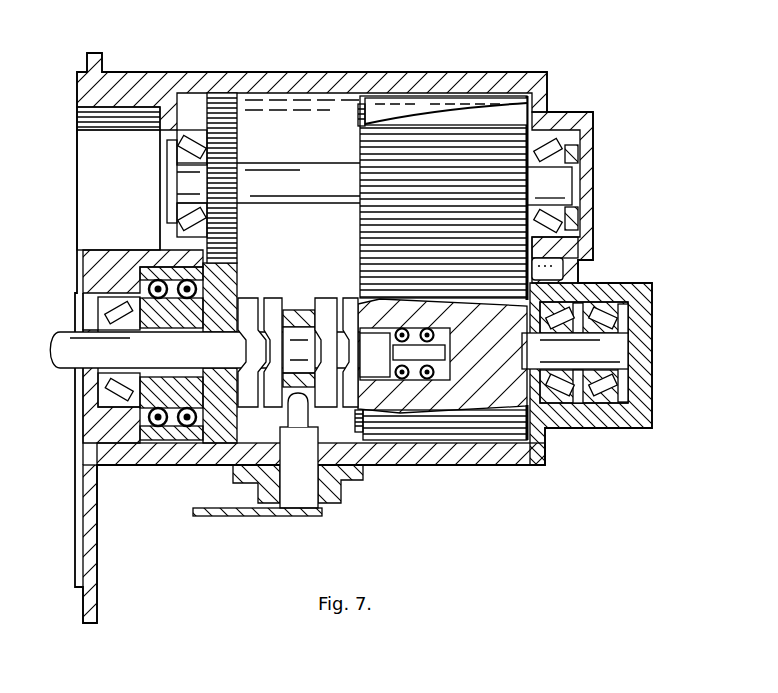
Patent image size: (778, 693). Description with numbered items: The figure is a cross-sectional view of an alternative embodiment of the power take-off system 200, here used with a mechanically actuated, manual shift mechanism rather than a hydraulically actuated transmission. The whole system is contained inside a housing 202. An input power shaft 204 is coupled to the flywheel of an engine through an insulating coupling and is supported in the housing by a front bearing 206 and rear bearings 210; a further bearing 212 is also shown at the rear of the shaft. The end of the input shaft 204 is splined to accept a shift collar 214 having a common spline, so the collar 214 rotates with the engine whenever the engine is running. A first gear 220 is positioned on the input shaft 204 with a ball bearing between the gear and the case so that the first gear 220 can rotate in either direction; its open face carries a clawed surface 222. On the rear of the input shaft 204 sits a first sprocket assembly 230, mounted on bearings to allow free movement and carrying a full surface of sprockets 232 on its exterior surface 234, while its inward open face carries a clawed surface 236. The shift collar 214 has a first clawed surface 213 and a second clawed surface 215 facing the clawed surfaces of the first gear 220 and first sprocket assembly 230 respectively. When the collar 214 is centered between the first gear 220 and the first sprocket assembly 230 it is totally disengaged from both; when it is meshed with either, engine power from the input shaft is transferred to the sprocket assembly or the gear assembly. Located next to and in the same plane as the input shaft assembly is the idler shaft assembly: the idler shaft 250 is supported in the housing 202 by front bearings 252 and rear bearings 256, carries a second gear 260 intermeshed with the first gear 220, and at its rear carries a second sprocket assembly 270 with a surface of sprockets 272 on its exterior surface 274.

The power take-off system 200 is at (512, 54).
The housing 202 is at (427, 460).
The input power shaft 204 is at (183, 357).
The front bearing 206 is at (98, 390).
The rear bearings 210 is at (563, 408).
The tapered roller bearing 212 is at (633, 312).
The first clawed surface 213 is at (273, 380).
The shift collar 214 is at (303, 343).
The second clawed surface 215 is at (326, 308).
The first gear 220 is at (187, 467).
The clawed surface 222 is at (247, 300).
The first sprocket assembly 230 is at (500, 367).
The sprockets 232 is at (505, 296).
The exterior surface 234 is at (522, 306).
The clawed surface 236 is at (352, 382).
The idler shaft 250 is at (267, 175).
The front bearings 252 is at (185, 130).
The rear bearings 256 is at (566, 147).
The second gear 260 is at (226, 220).
The second sprocket assembly 270 is at (458, 190).
The sprockets 272 is at (532, 112).
The exterior surface 274 is at (573, 157).